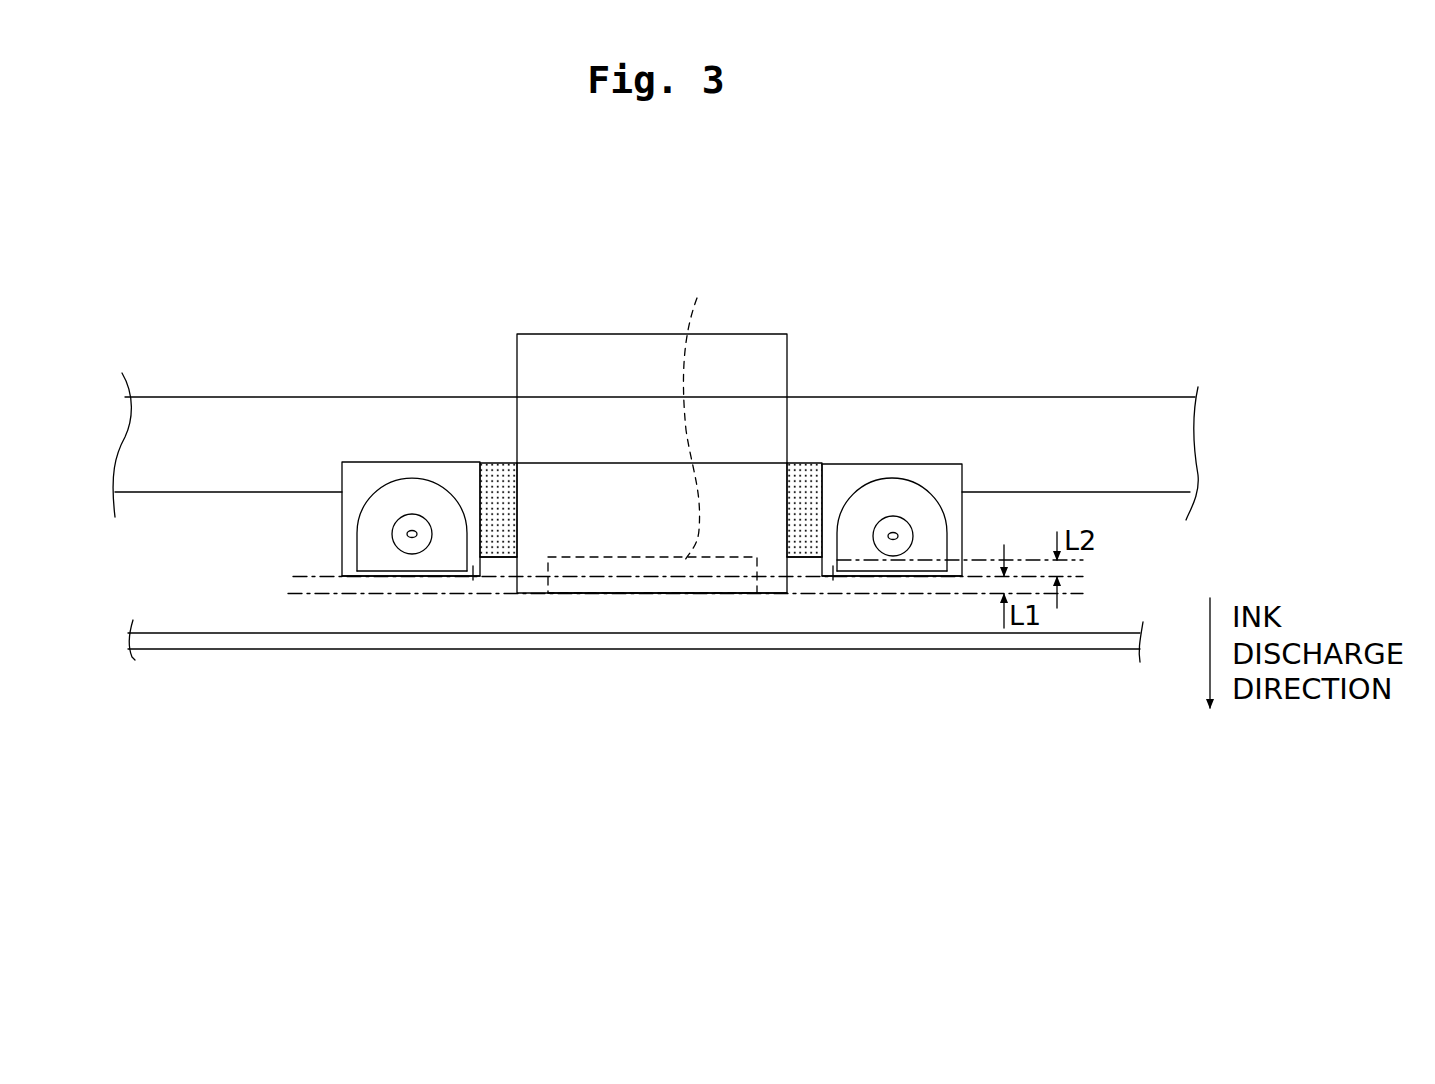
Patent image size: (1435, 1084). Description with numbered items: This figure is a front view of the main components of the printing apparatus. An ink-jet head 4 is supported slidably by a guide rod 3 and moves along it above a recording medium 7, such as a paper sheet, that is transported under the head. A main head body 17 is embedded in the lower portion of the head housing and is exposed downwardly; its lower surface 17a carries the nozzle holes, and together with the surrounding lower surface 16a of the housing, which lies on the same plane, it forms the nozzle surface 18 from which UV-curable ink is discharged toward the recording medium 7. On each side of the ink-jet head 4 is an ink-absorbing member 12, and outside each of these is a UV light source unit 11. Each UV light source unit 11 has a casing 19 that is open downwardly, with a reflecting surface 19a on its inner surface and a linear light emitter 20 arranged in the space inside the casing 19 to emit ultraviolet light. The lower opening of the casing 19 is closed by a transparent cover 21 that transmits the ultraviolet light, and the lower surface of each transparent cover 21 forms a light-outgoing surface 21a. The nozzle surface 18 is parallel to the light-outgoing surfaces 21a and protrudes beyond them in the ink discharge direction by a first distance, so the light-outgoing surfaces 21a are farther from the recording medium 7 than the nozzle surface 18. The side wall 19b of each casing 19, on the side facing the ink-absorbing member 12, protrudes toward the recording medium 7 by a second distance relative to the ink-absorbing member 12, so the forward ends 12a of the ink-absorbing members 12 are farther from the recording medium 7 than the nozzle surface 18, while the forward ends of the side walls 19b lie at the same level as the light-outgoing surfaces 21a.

The guide rod 3 is at (202, 418).
The ink-jet head 4 is at (585, 334).
The recording medium 7 is at (1077, 650).
The UV light source unit 11 is at (387, 462).
The ink-absorbing member 12 is at (495, 462).
The forward end of the ink-absorbing member 12a is at (498, 562).
The lower surface of the housing 16a is at (767, 593).
The main head body 17 is at (701, 414).
The lower surface of the main head body 17a is at (632, 593).
The nozzle surface 18 is at (605, 724).
The casing 19 is at (341, 547).
The reflecting surface 19a is at (363, 493).
The side wall 19b is at (473, 566).
The linear light emitter 20 is at (413, 537).
The transparent cover 21 is at (385, 572).
The light-outgoing surface 21a is at (407, 574).